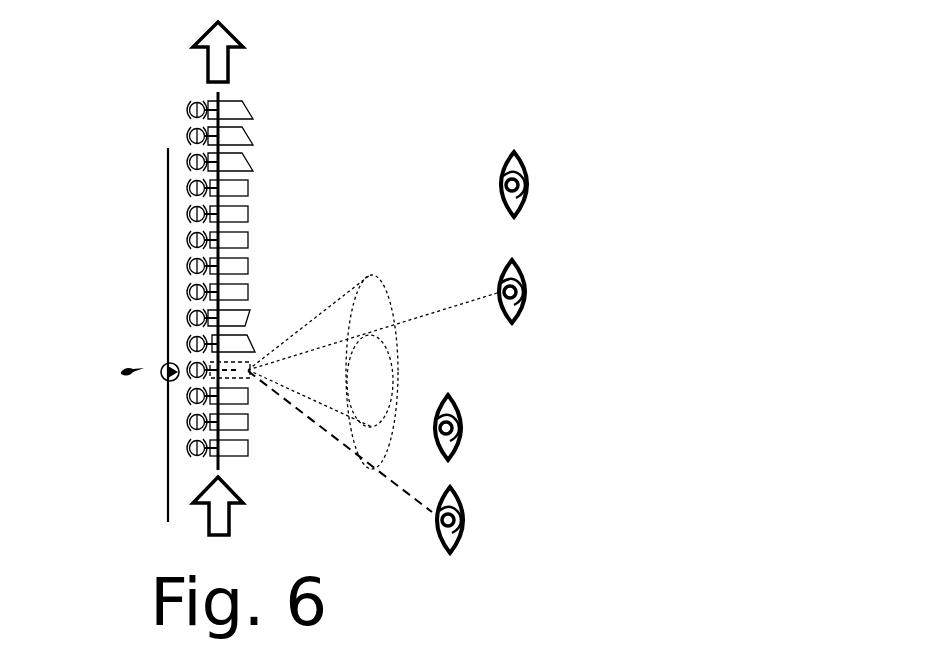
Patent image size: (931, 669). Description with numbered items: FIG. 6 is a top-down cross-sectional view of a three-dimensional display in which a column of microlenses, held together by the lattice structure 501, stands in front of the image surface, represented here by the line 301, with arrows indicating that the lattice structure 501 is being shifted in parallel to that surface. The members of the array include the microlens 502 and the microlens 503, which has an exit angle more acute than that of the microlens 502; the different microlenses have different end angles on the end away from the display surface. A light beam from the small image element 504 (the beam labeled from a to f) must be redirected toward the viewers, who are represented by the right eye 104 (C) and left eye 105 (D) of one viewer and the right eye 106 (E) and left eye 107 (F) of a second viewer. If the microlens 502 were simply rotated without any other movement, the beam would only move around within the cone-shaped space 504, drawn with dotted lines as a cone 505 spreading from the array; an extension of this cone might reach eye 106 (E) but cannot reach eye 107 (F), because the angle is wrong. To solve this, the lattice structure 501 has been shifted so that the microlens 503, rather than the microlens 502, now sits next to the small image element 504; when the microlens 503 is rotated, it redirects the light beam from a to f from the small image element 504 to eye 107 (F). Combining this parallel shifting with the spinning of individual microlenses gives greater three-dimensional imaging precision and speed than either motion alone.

The display screen 301 is at (168, 148).
The lattice structure 501 is at (223, 94).
The microlens 502 is at (247, 312).
The microlens 503 is at (255, 345).
The small image element 504 is at (163, 355).
The light cone 505 is at (357, 303).
The right eye 104 is at (530, 152).
The left eye 105 is at (532, 258).
The right eye 106 is at (472, 403).
The left eye 107 is at (475, 532).